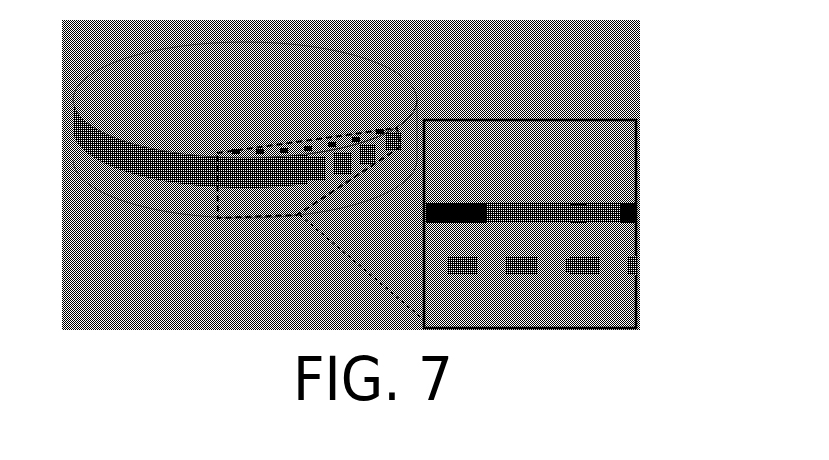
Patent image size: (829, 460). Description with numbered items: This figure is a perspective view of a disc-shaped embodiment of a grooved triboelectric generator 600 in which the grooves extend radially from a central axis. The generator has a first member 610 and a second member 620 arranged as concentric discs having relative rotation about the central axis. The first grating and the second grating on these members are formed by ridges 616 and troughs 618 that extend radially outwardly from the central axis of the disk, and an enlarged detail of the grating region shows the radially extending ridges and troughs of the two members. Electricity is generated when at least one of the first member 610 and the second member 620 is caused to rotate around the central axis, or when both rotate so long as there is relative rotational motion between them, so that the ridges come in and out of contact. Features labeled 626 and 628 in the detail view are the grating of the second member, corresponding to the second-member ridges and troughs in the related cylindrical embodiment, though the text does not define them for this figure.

The triboelectric generator 600 is at (93, 26).
The first member 610 is at (190, 186).
The ridges 616 is at (452, 263).
The troughs 618 is at (505, 268).
The second member 620 is at (83, 142).
The conductive trace 626 is at (478, 212).
The conductive trace 628 is at (512, 212).